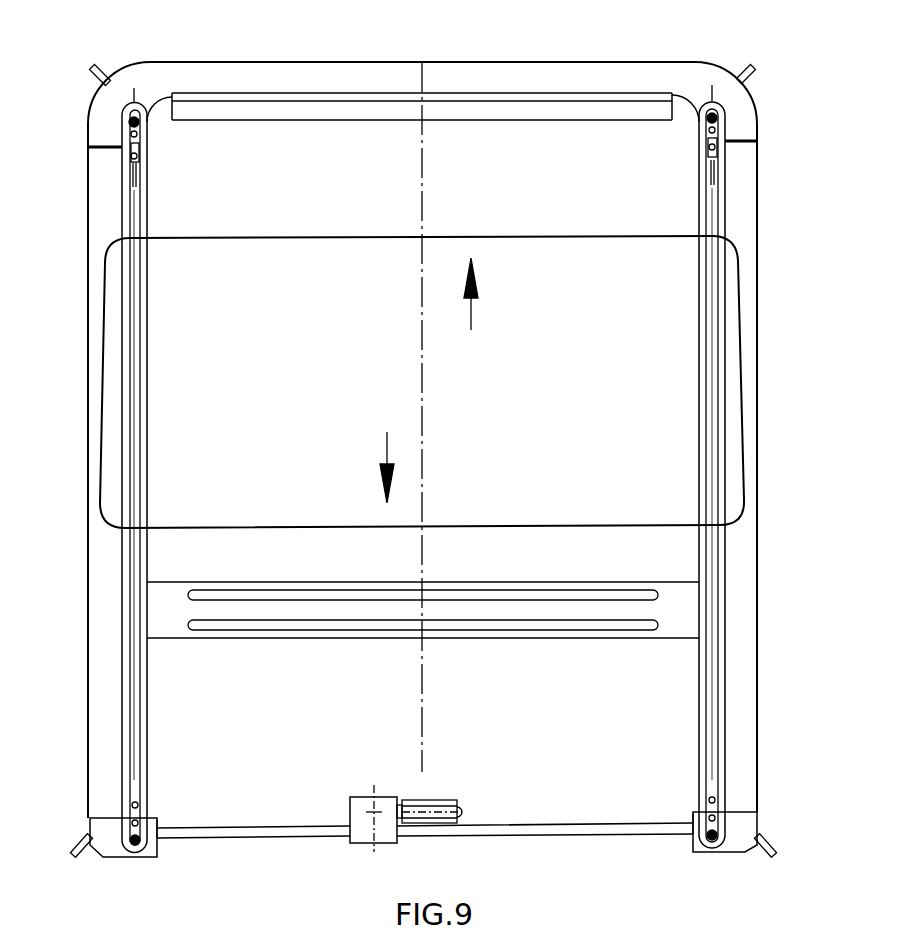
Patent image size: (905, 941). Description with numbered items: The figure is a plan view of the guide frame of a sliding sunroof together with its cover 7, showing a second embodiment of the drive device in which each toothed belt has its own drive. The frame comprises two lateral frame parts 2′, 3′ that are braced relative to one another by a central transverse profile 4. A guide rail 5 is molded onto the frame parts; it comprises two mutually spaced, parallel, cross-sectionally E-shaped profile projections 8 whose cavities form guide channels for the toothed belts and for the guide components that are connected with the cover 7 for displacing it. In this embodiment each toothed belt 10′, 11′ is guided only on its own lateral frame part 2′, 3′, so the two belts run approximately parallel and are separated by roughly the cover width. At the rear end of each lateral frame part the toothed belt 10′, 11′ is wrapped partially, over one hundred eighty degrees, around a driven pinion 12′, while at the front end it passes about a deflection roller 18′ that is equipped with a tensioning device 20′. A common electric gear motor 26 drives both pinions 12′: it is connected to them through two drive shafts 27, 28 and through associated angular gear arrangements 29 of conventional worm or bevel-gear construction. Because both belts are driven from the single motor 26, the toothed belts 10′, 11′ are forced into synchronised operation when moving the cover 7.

The lateral frame part 2′ is at (108, 194).
The lateral frame part 3′ is at (738, 192).
The deflection roller 18′ is at (148, 127).
The tensioning device 20′ is at (151, 156).
The profile projection 8 is at (143, 228).
The guide rail 5 is at (734, 217).
The cover 7 is at (257, 348).
The central transverse profile 4 is at (312, 606).
The toothed belt 10′ is at (160, 853).
The toothed belt 11′ is at (695, 852).
The driven pinion 12′ is at (136, 852).
The angular gear arrangement 29 is at (167, 813).
The drive shaft 27 is at (240, 833).
The drive shaft 28 is at (552, 828).
The electric gear motor 26 is at (433, 802).